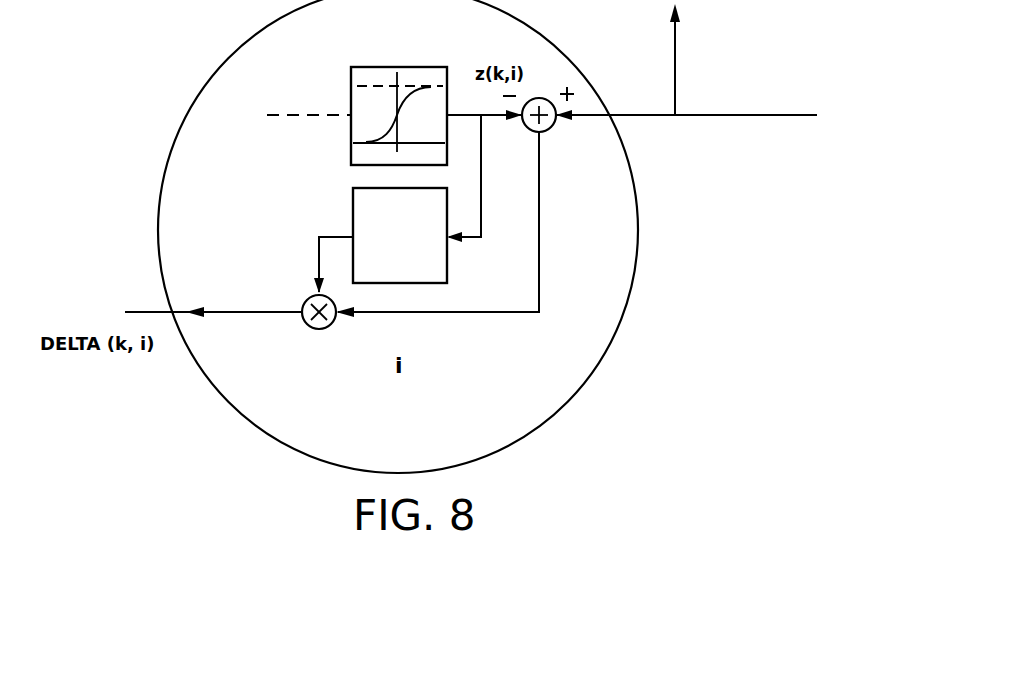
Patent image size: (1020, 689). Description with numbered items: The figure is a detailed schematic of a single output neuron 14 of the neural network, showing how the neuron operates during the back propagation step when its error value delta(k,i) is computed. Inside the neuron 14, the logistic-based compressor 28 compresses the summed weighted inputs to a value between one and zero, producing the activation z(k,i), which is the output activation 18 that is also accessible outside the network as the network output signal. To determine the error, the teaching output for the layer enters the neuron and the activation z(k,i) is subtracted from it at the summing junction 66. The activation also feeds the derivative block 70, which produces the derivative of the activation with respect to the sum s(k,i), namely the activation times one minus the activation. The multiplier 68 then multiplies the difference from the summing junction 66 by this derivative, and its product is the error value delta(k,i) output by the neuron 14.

The output neuron 14 is at (600, 364).
The output activation 18 is at (638, 116).
The logistic-based compressor 28 is at (392, 67).
The summing junction 66 is at (539, 98).
The multiplier 68 is at (318, 330).
The derivative block 70 is at (449, 262).